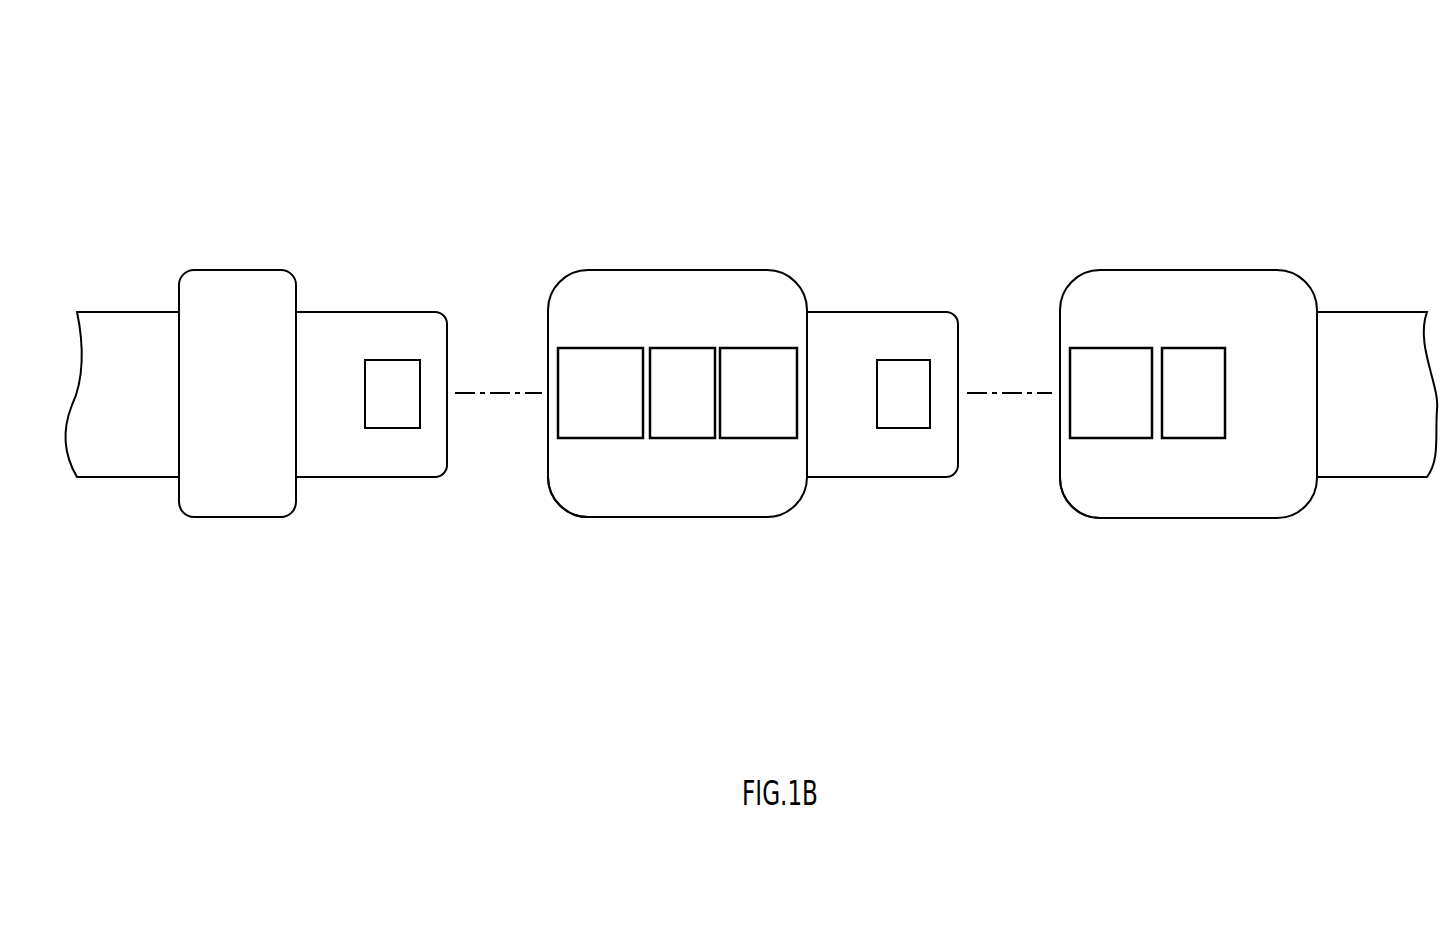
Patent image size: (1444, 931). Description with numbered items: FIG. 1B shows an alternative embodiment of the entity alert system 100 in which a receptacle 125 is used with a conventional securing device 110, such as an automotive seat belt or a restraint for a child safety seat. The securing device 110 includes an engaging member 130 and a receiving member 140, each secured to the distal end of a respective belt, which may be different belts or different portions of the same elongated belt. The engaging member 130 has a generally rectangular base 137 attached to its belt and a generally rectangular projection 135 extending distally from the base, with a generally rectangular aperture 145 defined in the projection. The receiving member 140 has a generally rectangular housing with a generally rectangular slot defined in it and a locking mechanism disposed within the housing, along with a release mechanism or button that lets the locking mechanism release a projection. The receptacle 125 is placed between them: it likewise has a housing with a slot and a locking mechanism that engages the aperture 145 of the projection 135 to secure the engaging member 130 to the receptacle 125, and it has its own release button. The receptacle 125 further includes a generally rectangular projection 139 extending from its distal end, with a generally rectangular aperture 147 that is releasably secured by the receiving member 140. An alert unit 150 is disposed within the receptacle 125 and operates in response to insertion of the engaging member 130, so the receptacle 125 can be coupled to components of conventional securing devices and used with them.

The entity alert system 100 is at (1129, 125).
The securing device 110 is at (376, 572).
The receptacle 125 is at (702, 240).
The engaging member 130 is at (155, 276).
The projection 135 is at (323, 310).
The base 137 is at (220, 270).
The projection 139 is at (858, 311).
The receiving member 140 is at (1225, 240).
The aperture 145 is at (392, 380).
The aperture 147 is at (902, 382).
The alert unit 150 is at (757, 438).